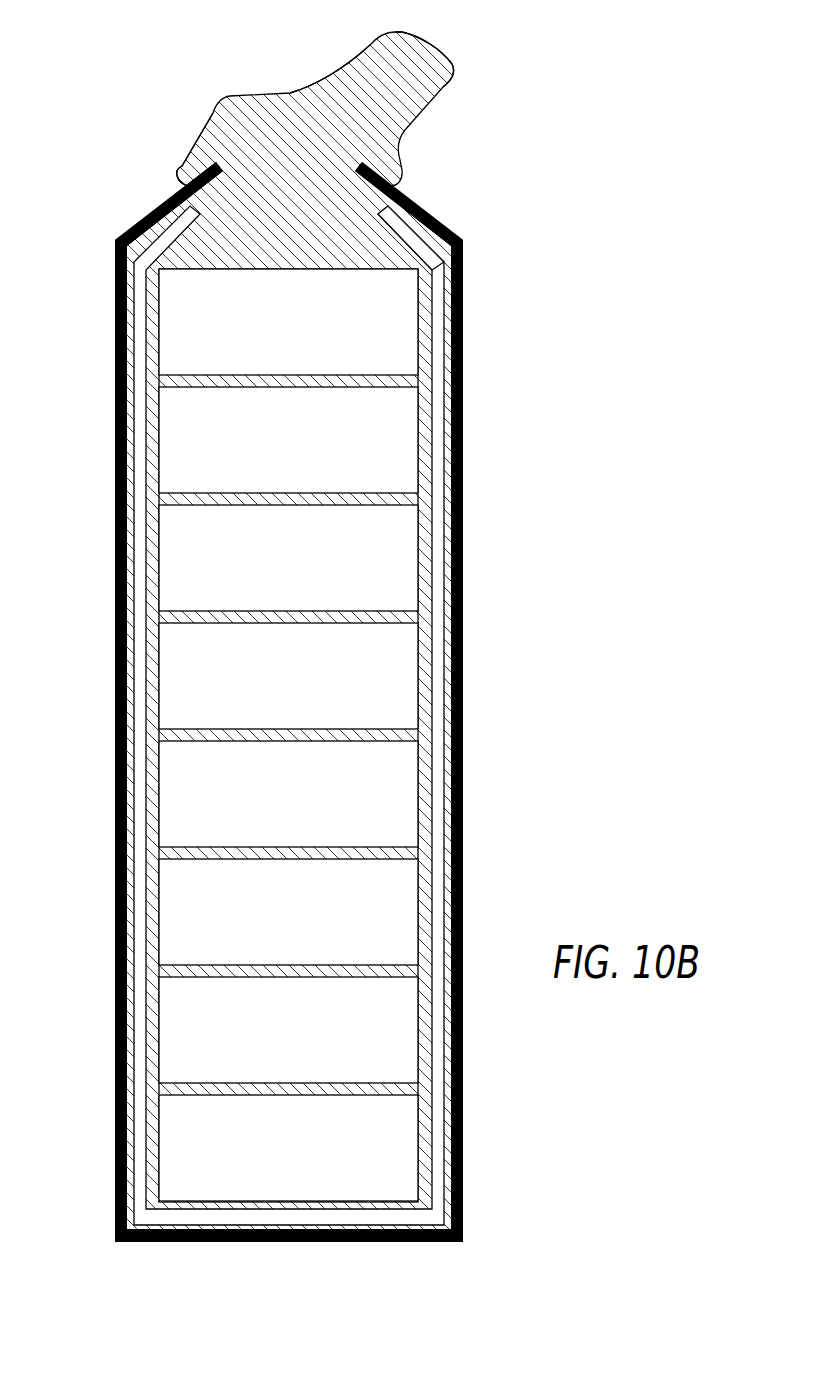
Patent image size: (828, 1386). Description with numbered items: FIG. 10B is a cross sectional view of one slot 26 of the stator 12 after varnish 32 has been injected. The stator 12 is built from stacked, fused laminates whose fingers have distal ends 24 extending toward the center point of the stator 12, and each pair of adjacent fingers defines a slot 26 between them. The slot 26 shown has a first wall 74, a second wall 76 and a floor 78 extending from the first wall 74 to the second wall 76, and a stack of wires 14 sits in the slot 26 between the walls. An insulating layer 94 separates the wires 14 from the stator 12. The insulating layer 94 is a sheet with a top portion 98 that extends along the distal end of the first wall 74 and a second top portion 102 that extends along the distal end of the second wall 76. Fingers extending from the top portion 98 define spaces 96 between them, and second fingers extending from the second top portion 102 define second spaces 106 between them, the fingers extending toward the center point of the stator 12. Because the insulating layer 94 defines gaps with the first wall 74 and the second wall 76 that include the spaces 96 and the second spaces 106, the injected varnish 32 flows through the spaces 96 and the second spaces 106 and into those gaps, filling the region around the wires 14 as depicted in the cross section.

The stator 12 is at (464, 280).
The wires 14 is at (302, 1163).
The distal ends 24 is at (180, 189).
The slot 26 is at (258, 74).
The varnish 32 is at (455, 92).
The first wall 74 is at (115, 530).
The second wall 76 is at (463, 576).
The floor 78 is at (375, 1243).
The insulating layer 94 is at (436, 462).
The spaces 96 is at (236, 201).
The top portion 98 is at (140, 410).
The second top portion 102 is at (413, 245).
The second spaces 106 is at (350, 194).